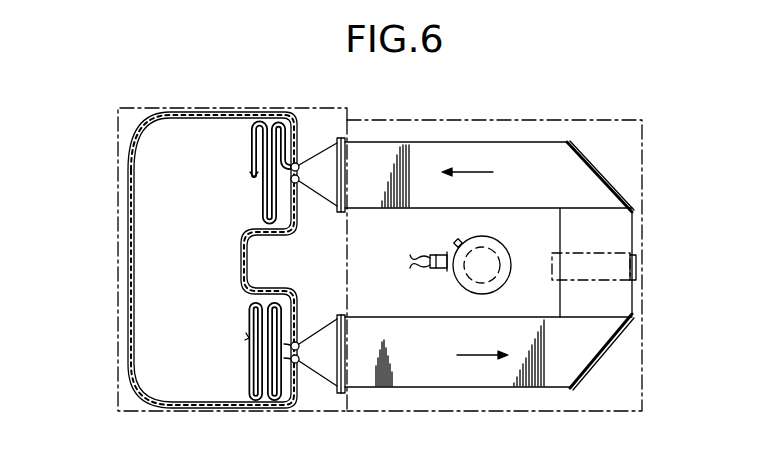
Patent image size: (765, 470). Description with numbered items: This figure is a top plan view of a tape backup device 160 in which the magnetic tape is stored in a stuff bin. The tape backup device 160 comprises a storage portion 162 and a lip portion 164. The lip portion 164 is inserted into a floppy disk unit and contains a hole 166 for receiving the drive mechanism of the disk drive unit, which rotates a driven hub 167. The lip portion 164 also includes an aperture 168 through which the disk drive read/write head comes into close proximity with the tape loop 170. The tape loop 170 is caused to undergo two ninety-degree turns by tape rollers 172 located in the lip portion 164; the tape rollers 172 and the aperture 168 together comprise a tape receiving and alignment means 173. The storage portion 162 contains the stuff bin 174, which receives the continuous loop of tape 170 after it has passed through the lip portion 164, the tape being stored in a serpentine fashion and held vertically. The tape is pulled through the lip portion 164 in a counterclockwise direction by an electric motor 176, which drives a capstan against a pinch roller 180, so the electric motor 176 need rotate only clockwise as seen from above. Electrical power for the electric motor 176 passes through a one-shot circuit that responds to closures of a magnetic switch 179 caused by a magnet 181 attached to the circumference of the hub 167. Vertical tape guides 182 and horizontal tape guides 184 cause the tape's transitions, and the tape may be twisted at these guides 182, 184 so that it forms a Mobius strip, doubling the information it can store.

The tape backup device 160 is at (416, 109).
The storage portion 162 is at (142, 110).
The lip portion 164 is at (617, 122).
The hole 166 is at (511, 248).
The driven hub 167 is at (487, 294).
The aperture 168 is at (637, 276).
The tape loop 170 is at (487, 376).
The tape rollers 172 is at (566, 140).
The tape receiving and alignment means 173 is at (672, 234).
The stuff bin 174 is at (152, 321).
The electric motor 176 is at (301, 148).
The magnetic switch 179 is at (432, 270).
The pinch roller 180 is at (299, 182).
The magnet 181 is at (456, 244).
The vertical tape guides 182 is at (298, 344).
The horizontal tape guides 184 is at (348, 152).